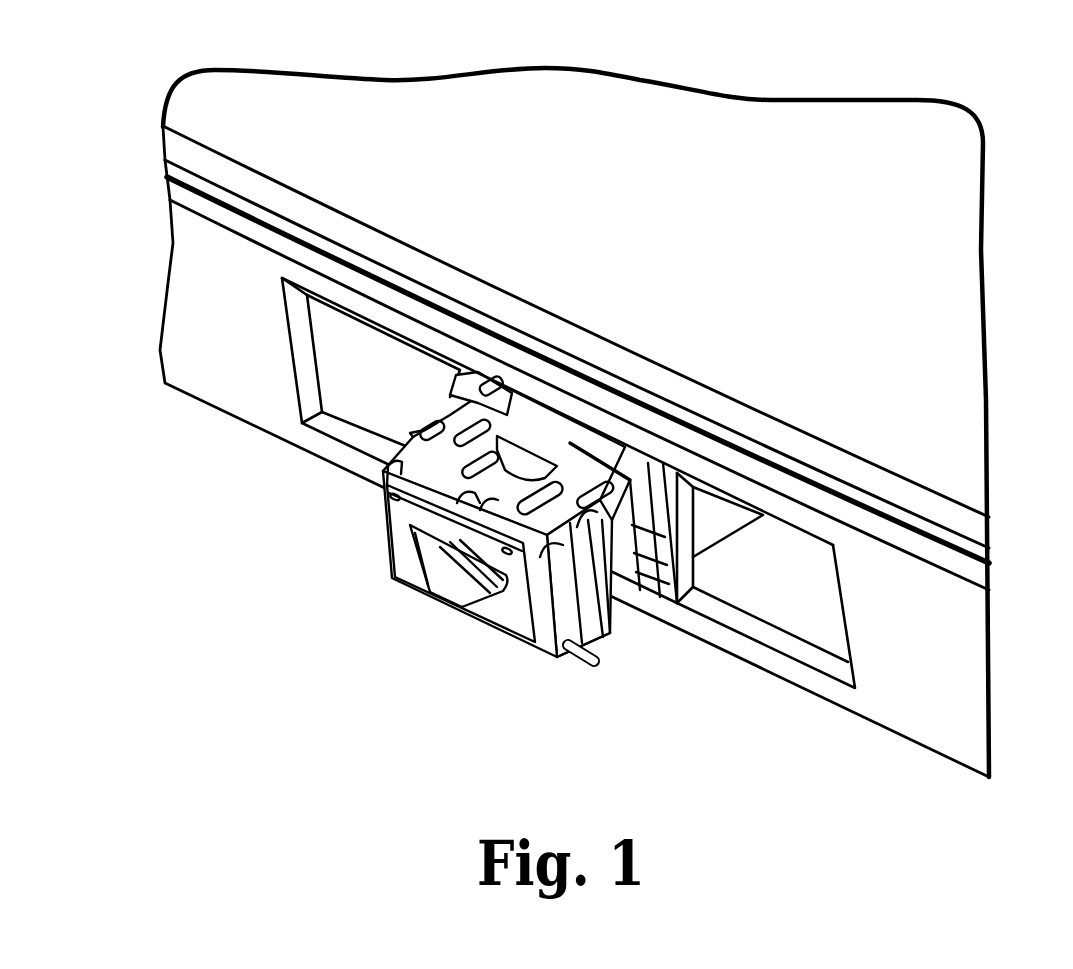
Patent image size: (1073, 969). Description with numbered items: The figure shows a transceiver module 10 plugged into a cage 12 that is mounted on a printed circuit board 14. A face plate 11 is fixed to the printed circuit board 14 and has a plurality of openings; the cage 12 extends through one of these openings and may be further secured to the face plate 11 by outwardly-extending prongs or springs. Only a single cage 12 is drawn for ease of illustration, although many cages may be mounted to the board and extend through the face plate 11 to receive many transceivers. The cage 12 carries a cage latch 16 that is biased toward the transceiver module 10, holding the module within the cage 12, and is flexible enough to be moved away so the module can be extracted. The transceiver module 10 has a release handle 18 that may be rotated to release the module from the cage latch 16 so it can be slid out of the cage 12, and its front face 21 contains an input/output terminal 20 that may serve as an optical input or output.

The transceiver module 10 is at (494, 399).
The face plate 11 is at (243, 320).
The cage 12 is at (651, 596).
The printed circuit board 14 is at (616, 422).
The cage latch 16 is at (546, 418).
The release handle 18 is at (584, 670).
The input/output terminal 20 is at (459, 610).
The front face 21 is at (513, 623).